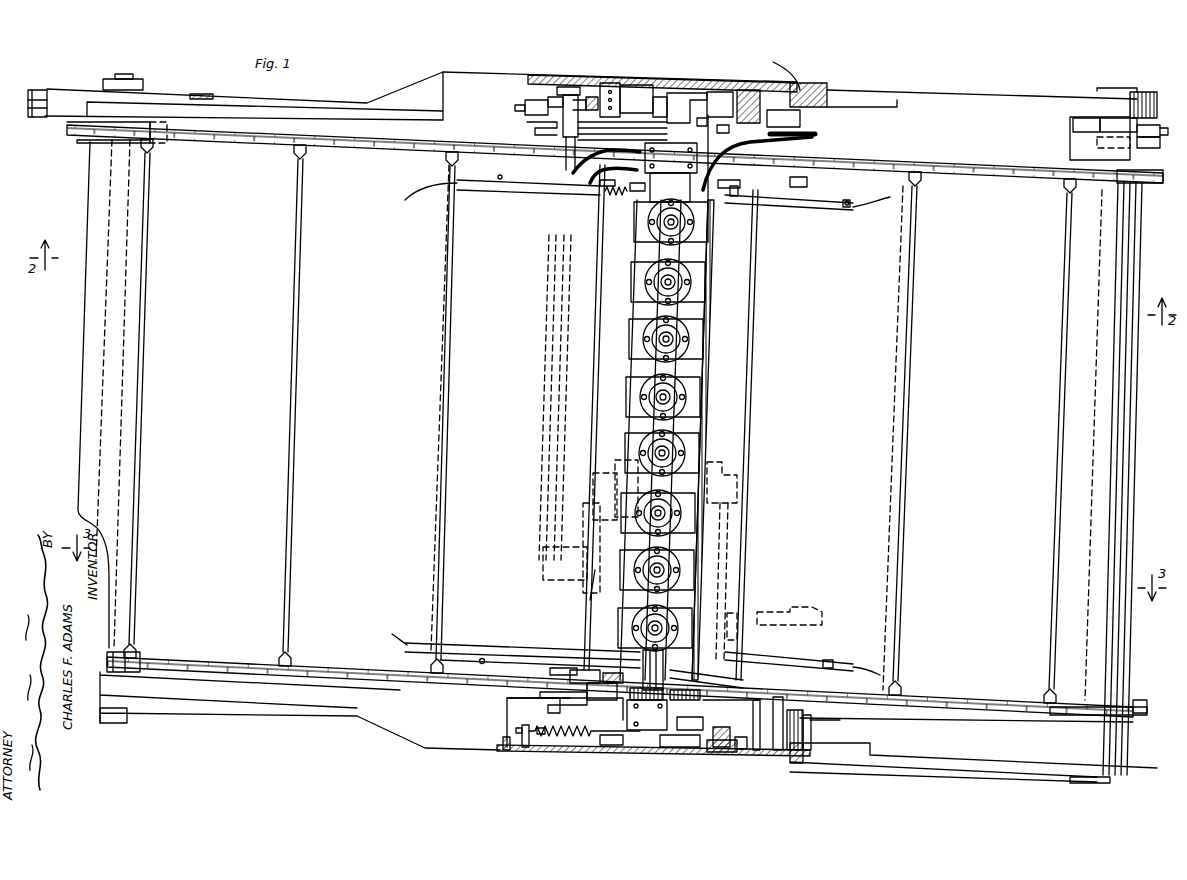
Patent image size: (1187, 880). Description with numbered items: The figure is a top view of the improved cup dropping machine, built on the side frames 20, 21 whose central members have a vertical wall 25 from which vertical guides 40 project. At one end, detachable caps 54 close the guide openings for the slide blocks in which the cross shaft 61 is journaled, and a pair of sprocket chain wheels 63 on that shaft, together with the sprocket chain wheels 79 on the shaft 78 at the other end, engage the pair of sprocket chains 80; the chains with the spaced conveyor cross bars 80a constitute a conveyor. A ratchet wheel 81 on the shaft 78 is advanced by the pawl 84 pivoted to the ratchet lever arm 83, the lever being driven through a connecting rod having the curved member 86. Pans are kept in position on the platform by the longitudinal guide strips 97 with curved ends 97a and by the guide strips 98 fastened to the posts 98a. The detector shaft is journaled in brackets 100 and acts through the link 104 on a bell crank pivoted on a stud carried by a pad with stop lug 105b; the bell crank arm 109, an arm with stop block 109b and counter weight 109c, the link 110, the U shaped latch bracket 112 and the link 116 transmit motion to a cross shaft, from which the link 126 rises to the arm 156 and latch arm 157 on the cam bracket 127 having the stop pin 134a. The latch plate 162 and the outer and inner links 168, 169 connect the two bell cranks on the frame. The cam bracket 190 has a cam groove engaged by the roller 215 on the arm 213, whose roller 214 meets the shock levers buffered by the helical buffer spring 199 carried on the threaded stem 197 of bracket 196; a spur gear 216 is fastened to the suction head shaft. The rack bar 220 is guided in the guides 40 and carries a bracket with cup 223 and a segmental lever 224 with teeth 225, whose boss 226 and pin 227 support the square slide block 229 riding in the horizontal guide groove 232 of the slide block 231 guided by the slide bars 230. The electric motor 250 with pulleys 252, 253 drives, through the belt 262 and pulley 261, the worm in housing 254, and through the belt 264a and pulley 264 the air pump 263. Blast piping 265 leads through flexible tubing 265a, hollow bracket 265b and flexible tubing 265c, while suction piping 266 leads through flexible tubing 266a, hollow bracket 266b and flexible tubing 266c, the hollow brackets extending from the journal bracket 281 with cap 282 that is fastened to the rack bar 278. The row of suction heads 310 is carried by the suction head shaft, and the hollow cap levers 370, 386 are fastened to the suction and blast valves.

The side frame 20 is at (560, 87).
The side frame 21 is at (512, 750).
The vertical wall 25 is at (818, 82).
The vertical guides 40 is at (715, 770).
The detachable cap 54 is at (47, 88).
The cross shaft 61 is at (108, 316).
The sprocket chain wheels 63 is at (75, 135).
The shaft 78 is at (1102, 258).
The sprocket chain wheels 79 is at (1150, 183).
The sprocket chains 80 is at (252, 140).
The conveyor cross bars 80a is at (141, 314).
The ratchet wheel 81 is at (1090, 117).
The ratchet lever arm 83 is at (1150, 143).
The pawl 84 is at (1157, 125).
The curved member 86 is at (1080, 148).
The longitudinal guide strips 97 is at (450, 645).
The curved ends 97a is at (402, 196).
The longitudinal guide strips 98 is at (520, 650).
The posts 98a is at (503, 180).
The brackets 100 is at (622, 85).
The link 104 is at (530, 124).
The stop lug 105b is at (568, 93).
The bell crank arm 109 is at (580, 98).
The stop block 109b is at (550, 98).
The counter weight 109c is at (530, 100).
The link 110 is at (662, 97).
The latch bracket 112 is at (650, 110).
The link 116 is at (595, 97).
The link 126 is at (555, 703).
The cam bracket 127 is at (690, 665).
The stop pin 134a is at (605, 672).
The arm 156 is at (565, 715).
The latch arm 157 is at (570, 668).
The latch plate 162 is at (697, 129).
The outer link 168 is at (690, 93).
The inner link 169 is at (724, 119).
The cam bracket 190 is at (673, 755).
The bracket 196 is at (528, 745).
The threaded stem 197 is at (507, 712).
The helical buffer spring 199 is at (570, 740).
The arm 213 is at (640, 752).
The roller 214 is at (625, 730).
The roller 215 is at (650, 752).
The spur gear 216 is at (630, 692).
The rack bar 220 is at (700, 725).
The cup 223 is at (647, 715).
The segmental lever 224 is at (692, 722).
The teeth 225 is at (841, 728).
The boss 226 is at (805, 725).
The pin 227 is at (812, 735).
The square slide block 229 is at (795, 765).
The slide bars 230 is at (740, 752).
The slide block 231 is at (757, 752).
The horizontal guide groove 232 is at (778, 752).
The electric motor 250 is at (620, 445).
The pulley 252 is at (740, 498).
The pulley 253 is at (590, 480).
The housing 254 is at (822, 620).
The pulley 261 is at (737, 625).
The belt 262 is at (738, 555).
The air pump 263 is at (545, 564).
The pulley 264 is at (585, 580).
The belt 264a is at (590, 520).
The blast piping 265 is at (548, 262).
The flexible tubing 265a is at (818, 136).
The hollow bracket 265b is at (785, 125).
The flexible tubing 265c is at (757, 163).
The suction piping 266 is at (568, 350).
The flexible tubing 266a is at (598, 160).
The hollow bracket 266b is at (600, 180).
The flexible tubing 266c is at (600, 188).
The rack bar 278 is at (752, 90).
The journal bracket 281 is at (730, 92).
The cap 282 is at (671, 158).
The suction heads 310 is at (695, 305).
The hollow cap lever 370 is at (652, 195).
The hollow cap lever 386 is at (722, 190).